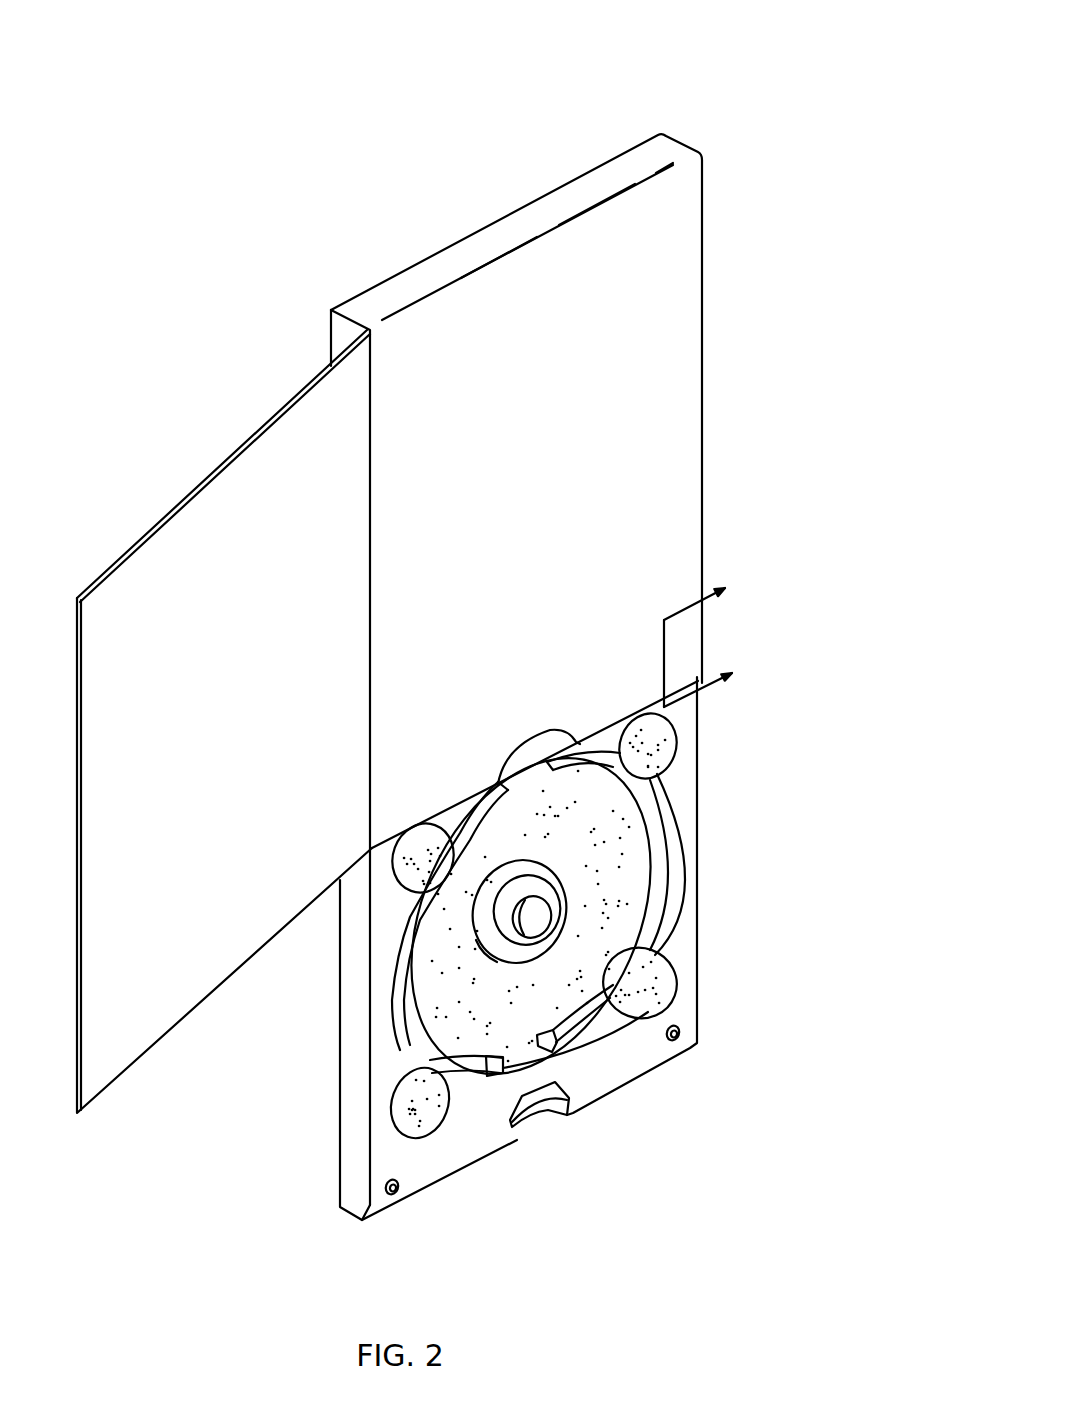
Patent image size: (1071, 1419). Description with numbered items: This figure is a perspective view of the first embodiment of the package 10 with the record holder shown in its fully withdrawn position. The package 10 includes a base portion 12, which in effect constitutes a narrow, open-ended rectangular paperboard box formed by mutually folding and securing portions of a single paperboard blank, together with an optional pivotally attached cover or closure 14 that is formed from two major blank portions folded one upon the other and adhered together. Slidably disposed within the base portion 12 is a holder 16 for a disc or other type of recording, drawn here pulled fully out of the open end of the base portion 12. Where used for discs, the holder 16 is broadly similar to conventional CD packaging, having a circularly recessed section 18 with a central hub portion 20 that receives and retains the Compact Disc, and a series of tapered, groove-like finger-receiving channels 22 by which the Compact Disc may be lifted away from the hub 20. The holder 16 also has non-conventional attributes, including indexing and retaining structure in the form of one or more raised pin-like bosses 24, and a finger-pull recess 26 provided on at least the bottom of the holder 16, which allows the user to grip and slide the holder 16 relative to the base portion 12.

The package 10 is at (670, 76).
The base portion 12 is at (670, 343).
The cover 14 is at (187, 553).
The holder 16 is at (686, 1000).
The circularly recessed section 18 is at (625, 852).
The central hub portion 20 is at (490, 952).
The finger-receiving channels 22 is at (660, 742).
The raised pin-like bosses 24 is at (682, 1040).
The finger-pull recess 26 is at (540, 1117).